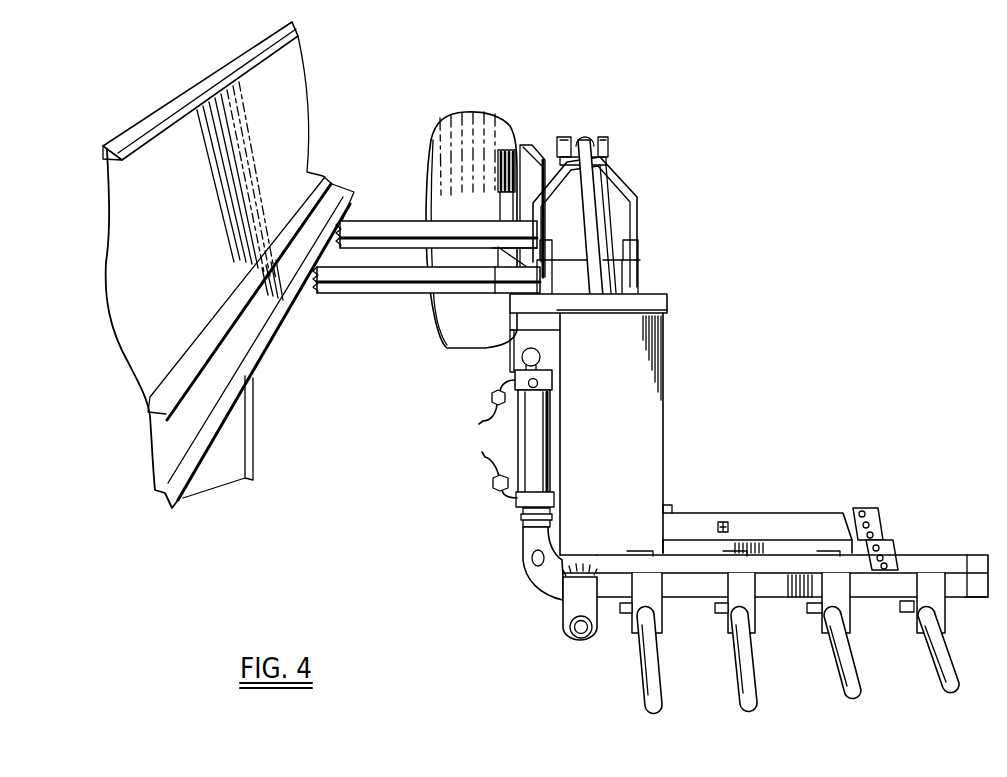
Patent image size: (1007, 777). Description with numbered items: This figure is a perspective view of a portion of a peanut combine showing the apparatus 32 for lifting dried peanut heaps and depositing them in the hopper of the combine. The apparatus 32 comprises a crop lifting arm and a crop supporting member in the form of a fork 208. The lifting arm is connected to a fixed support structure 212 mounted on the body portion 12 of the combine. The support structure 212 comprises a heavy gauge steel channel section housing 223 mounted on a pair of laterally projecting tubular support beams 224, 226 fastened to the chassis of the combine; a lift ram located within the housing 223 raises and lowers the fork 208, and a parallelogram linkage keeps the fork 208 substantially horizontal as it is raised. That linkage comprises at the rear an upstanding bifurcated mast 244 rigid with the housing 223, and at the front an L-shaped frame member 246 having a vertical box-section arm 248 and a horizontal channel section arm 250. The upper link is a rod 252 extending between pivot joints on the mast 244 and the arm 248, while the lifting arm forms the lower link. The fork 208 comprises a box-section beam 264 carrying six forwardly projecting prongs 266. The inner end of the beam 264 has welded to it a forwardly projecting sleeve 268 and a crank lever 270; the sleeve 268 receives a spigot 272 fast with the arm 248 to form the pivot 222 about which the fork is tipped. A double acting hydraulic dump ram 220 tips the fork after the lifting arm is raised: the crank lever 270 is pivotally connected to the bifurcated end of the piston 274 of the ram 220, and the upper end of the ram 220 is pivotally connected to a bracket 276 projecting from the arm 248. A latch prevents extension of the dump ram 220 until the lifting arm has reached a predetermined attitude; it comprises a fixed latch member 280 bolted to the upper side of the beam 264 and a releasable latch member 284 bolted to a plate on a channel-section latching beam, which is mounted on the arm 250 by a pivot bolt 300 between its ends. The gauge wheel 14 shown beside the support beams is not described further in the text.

The body portion 12 is at (282, 103).
The gauge wheel 14 is at (488, 115).
The apparatus 32 is at (738, 268).
The fork 208 is at (947, 555).
The fixed support structure 212 is at (645, 282).
The double acting hydraulic dump ram 220 is at (520, 429).
The pivot 222 is at (559, 614).
The channel section housing 223 is at (620, 277).
The tubular support beam 224 is at (341, 293).
The tubular support beam 226 is at (382, 222).
The bifurcated mast 244 is at (548, 158).
The L-shaped frame member 246 is at (667, 491).
The vertical box-section arm 248 is at (650, 421).
The horizontal channel section arm 250 is at (790, 517).
The rod 252 is at (587, 217).
The box-section beam 264 is at (961, 590).
The prongs 266 is at (848, 678).
The sleeve 268 is at (643, 630).
The crank lever 270 is at (532, 575).
The spigot 272 is at (573, 633).
The piston 274 is at (520, 516).
The bracket 276 is at (521, 357).
The fixed latch member 280 is at (897, 545).
The releasable latch member 284 is at (858, 508).
The pivot bolt 300 is at (718, 520).